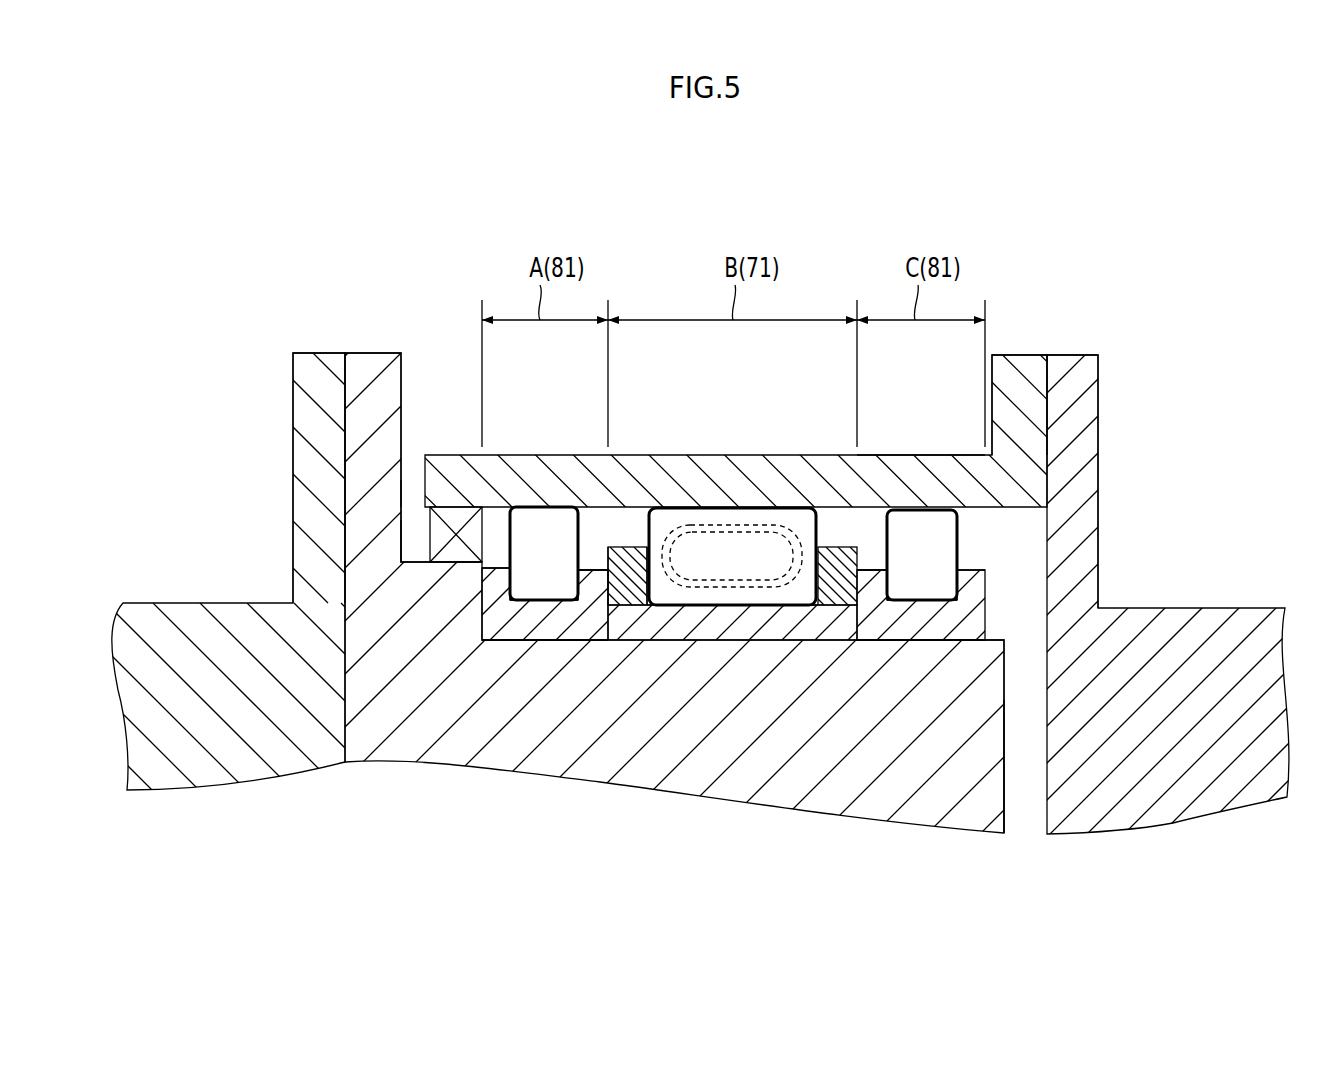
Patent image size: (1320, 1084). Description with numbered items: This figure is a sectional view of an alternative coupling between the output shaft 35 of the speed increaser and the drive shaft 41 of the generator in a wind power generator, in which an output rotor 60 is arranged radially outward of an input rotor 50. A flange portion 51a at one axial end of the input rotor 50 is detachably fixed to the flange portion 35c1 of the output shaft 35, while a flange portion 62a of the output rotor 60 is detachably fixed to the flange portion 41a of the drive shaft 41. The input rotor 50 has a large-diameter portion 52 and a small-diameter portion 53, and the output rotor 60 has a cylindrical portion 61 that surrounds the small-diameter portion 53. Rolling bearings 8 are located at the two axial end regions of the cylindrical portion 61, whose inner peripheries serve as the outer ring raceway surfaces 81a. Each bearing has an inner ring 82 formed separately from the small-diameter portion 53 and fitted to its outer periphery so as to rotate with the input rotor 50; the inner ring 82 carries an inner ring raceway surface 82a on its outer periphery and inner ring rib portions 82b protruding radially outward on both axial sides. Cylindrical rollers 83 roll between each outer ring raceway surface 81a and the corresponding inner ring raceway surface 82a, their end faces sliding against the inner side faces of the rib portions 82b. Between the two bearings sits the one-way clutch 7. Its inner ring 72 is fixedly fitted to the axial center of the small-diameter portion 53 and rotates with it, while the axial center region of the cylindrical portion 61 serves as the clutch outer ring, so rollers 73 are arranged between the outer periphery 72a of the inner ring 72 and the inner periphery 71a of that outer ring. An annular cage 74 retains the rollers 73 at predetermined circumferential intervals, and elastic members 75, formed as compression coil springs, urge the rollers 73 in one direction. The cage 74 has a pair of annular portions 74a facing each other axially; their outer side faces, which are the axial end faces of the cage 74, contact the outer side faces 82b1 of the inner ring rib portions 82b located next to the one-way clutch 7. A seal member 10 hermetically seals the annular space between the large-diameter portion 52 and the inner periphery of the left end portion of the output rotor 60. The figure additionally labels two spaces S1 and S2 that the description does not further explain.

The output shaft 35 is at (186, 603).
The flange portion 35c1 is at (320, 353).
The flange portion 51a is at (372, 353).
The input rotor 50 is at (398, 765).
The large-diameter portion 52 is at (413, 552).
The small-diameter portion 53 is at (1000, 640).
The seal member 10 is at (458, 515).
The second space S2 is at (408, 465).
The first space S1 is at (1033, 783).
The cylindrical portion 61 is at (790, 453).
The flange portion 62a is at (1020, 355).
The output rotor 60 is at (873, 448).
The drive shaft 41 is at (1190, 608).
The flange portion 41a is at (1080, 355).
The inner ring 82 is at (500, 625).
The rolling bearings 8 is at (520, 640).
The inner ring raceway surface 82a is at (560, 625).
The inner ring rib portions 82b is at (498, 572).
The outer side faces 82b1 is at (612, 618).
The one-way clutch 7 is at (729, 623).
The cage 74 is at (630, 547).
The annular portions 74a is at (641, 562).
The inner ring 72 is at (718, 625).
The outer periphery 72a is at (668, 610).
The outer ring raceway surfaces 81a is at (545, 520).
The cylindrical rollers 83 is at (558, 528).
The inner periphery 71a is at (705, 530).
The elastic members 75 is at (730, 520).
The rollers 73 is at (765, 520).